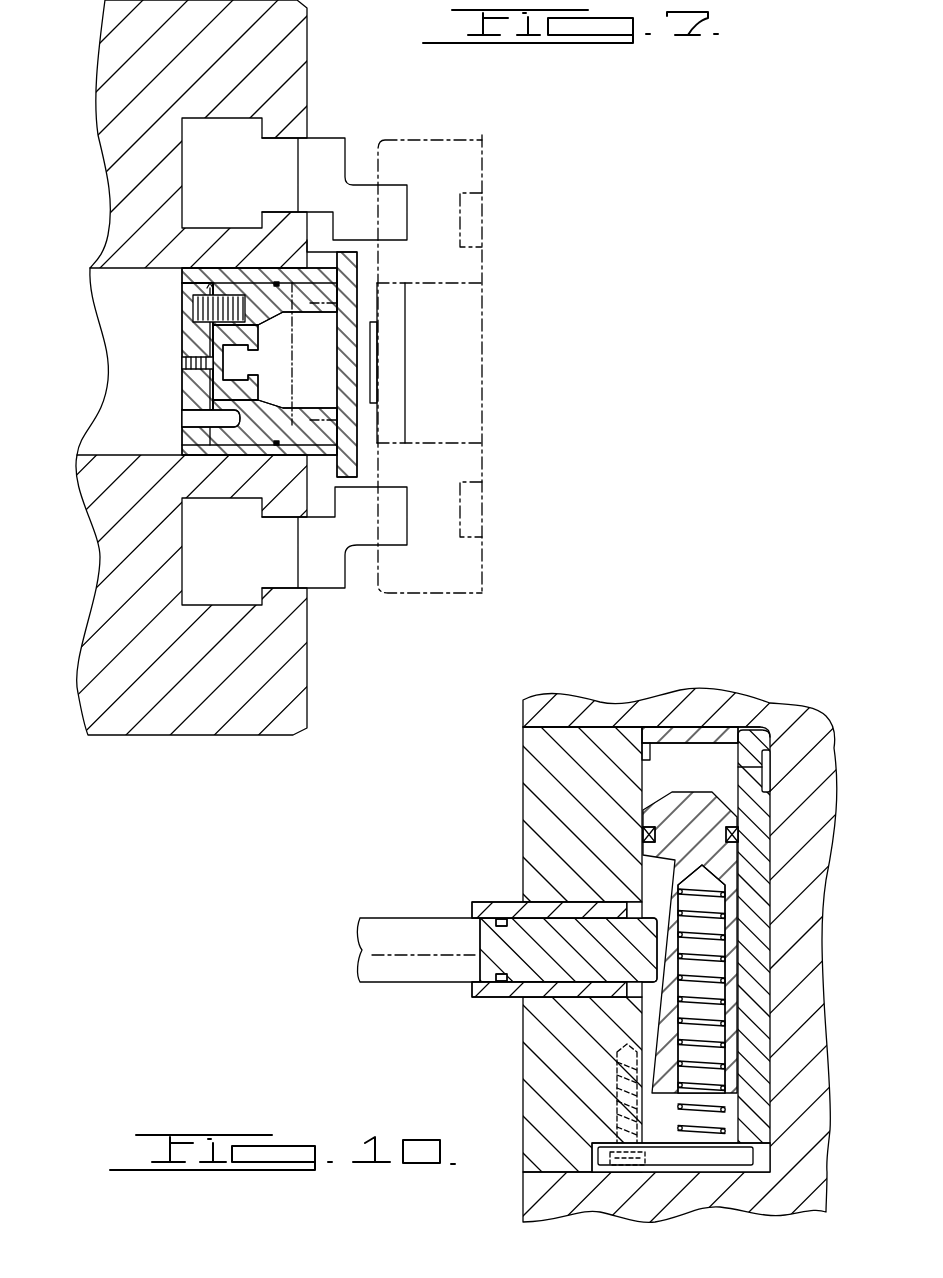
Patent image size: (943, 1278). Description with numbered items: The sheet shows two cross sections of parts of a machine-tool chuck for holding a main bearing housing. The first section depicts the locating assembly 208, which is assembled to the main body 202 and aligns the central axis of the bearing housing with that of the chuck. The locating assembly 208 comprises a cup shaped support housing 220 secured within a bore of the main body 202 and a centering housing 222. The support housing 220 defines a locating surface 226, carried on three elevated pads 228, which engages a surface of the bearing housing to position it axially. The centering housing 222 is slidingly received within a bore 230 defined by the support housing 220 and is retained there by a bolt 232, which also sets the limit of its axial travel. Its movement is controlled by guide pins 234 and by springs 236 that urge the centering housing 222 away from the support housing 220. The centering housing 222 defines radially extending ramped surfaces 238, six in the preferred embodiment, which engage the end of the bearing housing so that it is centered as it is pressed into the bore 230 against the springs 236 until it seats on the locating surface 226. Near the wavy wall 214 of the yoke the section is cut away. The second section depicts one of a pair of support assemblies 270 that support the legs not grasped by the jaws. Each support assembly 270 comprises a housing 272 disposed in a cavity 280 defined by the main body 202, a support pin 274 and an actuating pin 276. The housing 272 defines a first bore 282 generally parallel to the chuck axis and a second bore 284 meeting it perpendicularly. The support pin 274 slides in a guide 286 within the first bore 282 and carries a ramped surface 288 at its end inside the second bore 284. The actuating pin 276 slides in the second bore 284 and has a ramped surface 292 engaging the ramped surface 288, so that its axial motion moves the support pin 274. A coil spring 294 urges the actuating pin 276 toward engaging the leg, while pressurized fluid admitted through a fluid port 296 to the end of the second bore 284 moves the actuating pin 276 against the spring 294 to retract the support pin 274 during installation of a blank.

In FIG. 7, the locating assembly 208 is at (150, 382).
In FIG. 7, the yoke web wall 214 is at (123, 270).
In FIG. 7, the support housing 220 is at (330, 262).
In FIG. 7, the centering housing 222 is at (250, 392).
In FIG. 7, the locating surface 226 is at (357, 458).
In FIG. 7, the elevated pads 228 is at (352, 470).
In FIG. 7, the bore 230 is at (247, 447).
In FIG. 7, the bolt 232 is at (218, 362).
In FIG. 7, the guide pins 234 is at (194, 418).
In FIG. 7, the springs 236 is at (207, 307).
In FIG. 7, the ramped surfaces 238 is at (306, 300).
In FIG. 10, the main body 202 is at (702, 703).
In FIG. 10, the support assembly 270 is at (500, 810).
In FIG. 10, the housing 272 is at (543, 1080).
In FIG. 10, the support pin 274 is at (378, 917).
In FIG. 10, the actuating pin 276 is at (699, 840).
In FIG. 10, the cavity 280 is at (552, 728).
In FIG. 10, the first bore 282 is at (528, 912).
In FIG. 10, the second bore 284 is at (642, 757).
In FIG. 10, the guide 286 is at (488, 994).
In FIG. 10, the ramped surface 288 is at (648, 942).
In FIG. 10, the ramped surface 292 is at (690, 927).
In FIG. 10, the coil spring 294 is at (706, 1016).
In FIG. 10, the fluid port 296 is at (746, 757).